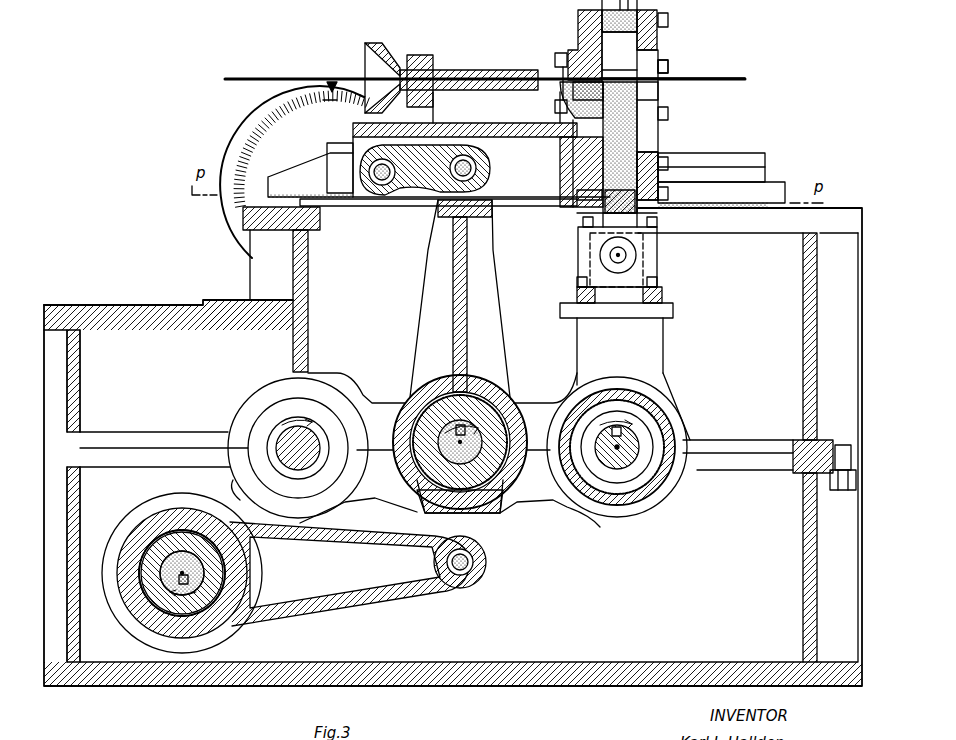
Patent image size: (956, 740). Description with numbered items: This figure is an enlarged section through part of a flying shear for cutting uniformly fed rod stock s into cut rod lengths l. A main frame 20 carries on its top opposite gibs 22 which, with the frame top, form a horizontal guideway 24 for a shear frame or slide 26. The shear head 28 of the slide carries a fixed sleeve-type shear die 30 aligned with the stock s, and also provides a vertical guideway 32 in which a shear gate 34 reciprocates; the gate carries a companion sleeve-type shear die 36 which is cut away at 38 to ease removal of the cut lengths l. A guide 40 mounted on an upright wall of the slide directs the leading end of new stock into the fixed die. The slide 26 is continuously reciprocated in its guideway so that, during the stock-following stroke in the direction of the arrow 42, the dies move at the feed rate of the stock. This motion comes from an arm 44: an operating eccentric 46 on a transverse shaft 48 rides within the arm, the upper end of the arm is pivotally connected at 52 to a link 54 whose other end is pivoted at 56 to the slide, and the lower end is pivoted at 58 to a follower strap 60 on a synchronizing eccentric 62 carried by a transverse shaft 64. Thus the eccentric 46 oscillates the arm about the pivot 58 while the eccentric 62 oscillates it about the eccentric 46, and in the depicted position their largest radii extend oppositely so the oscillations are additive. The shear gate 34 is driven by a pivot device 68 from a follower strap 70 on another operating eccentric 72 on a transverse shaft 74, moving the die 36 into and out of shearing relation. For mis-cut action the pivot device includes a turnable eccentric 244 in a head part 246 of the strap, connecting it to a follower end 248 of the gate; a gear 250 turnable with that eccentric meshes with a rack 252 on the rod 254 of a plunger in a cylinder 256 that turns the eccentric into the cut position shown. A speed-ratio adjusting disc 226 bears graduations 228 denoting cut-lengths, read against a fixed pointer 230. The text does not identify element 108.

The main frame 20 is at (850, 205).
The gibs 22 is at (726, 152).
The horizontal guideway 24 is at (766, 186).
The shear frame or slide 26 is at (352, 128).
The shear head 28 is at (590, 37).
The fixed sleeve-type shear die 30 is at (565, 70).
The vertical guideway 32 is at (600, 160).
The shear gate 34 is at (623, 118).
The shear die 36 is at (645, 88).
The cut-away 38 is at (625, 70).
The guide 40 is at (385, 62).
The arrow 42 is at (518, 112).
The arm 44 is at (478, 338).
The operating eccentric 46 is at (500, 410).
The transverse shaft 48 is at (445, 455).
The pivot connection 52 is at (472, 168).
The link 54 is at (430, 186).
The pivot connection 56 is at (380, 178).
The pivot connection 58 is at (460, 568).
The follower strap 60 is at (343, 603).
The synchronizing eccentric 62 is at (158, 582).
The transverse shaft 64 is at (172, 555).
The pivot device 68 is at (667, 261).
The follower strap 70 is at (660, 368).
The operating eccentric 72 is at (650, 432).
The transverse shaft 74 is at (605, 478).
The gear 108 is at (300, 470).
The disc 226 is at (246, 128).
The graduations 228 is at (330, 100).
The fixed pointer 230 is at (330, 104).
The turnable eccentric 244 is at (578, 227).
The head part 246 is at (580, 243).
The follower end 248 is at (656, 248).
The gear 250 is at (590, 258).
The rack 252 is at (660, 270).
The rod 254 is at (578, 295).
The cylinder 256 is at (616, 302).
The rod stock s is at (276, 77).
The cut rod lengths l is at (704, 77).